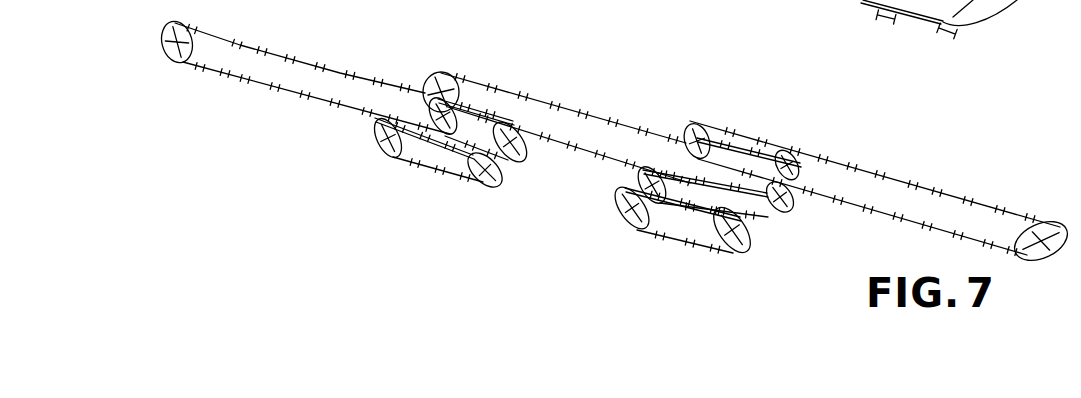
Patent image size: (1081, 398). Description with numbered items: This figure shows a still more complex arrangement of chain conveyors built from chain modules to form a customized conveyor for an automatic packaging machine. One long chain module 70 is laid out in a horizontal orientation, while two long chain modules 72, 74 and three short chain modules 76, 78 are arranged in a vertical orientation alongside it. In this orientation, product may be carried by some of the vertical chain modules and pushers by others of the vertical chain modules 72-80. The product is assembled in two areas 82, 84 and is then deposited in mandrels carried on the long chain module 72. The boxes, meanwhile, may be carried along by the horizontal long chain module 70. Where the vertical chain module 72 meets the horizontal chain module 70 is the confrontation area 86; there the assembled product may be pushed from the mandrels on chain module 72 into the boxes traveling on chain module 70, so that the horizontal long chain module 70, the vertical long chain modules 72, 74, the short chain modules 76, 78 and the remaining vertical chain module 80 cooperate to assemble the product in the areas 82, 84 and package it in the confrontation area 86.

The long chain module 70 is at (615, 158).
The long chain module 72 is at (634, 110).
The long chain module 74 is at (386, 42).
The short chain module 76 is at (758, 234).
The short chain module 78 is at (679, 244).
The vertical chain module 80 is at (438, 172).
The product assembly area 82 is at (648, 242).
The product assembly area 84 is at (378, 170).
The confrontation area 86 is at (708, 144).